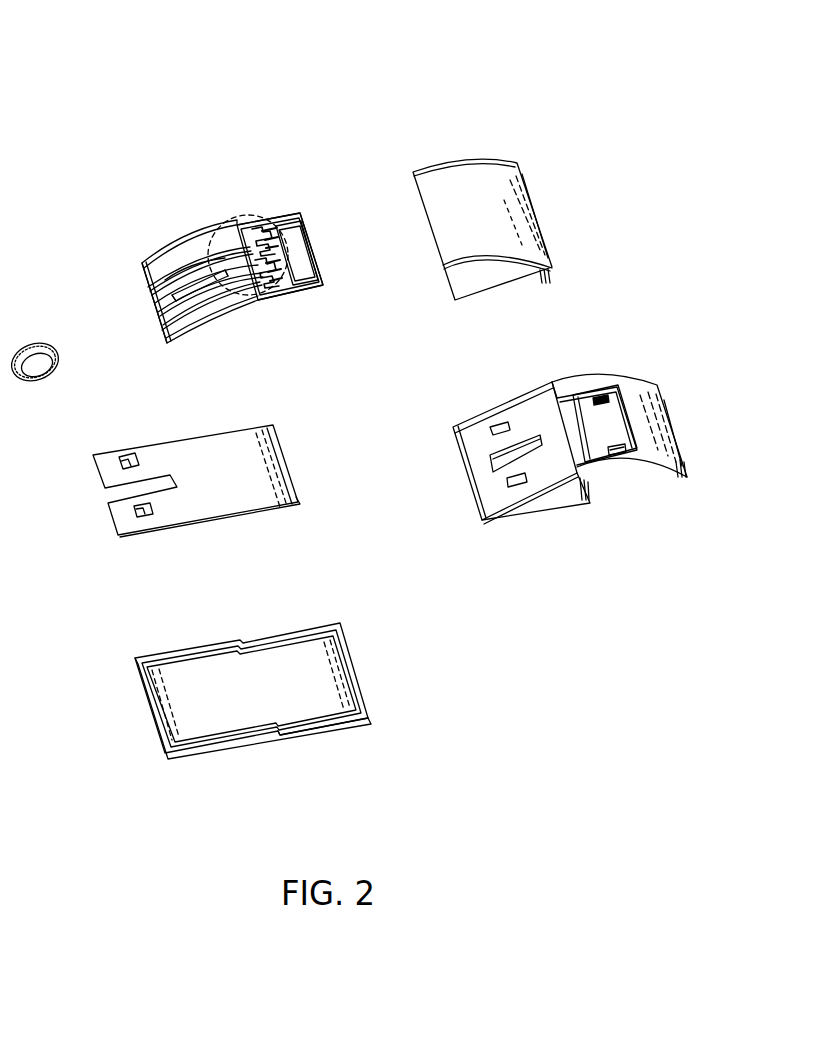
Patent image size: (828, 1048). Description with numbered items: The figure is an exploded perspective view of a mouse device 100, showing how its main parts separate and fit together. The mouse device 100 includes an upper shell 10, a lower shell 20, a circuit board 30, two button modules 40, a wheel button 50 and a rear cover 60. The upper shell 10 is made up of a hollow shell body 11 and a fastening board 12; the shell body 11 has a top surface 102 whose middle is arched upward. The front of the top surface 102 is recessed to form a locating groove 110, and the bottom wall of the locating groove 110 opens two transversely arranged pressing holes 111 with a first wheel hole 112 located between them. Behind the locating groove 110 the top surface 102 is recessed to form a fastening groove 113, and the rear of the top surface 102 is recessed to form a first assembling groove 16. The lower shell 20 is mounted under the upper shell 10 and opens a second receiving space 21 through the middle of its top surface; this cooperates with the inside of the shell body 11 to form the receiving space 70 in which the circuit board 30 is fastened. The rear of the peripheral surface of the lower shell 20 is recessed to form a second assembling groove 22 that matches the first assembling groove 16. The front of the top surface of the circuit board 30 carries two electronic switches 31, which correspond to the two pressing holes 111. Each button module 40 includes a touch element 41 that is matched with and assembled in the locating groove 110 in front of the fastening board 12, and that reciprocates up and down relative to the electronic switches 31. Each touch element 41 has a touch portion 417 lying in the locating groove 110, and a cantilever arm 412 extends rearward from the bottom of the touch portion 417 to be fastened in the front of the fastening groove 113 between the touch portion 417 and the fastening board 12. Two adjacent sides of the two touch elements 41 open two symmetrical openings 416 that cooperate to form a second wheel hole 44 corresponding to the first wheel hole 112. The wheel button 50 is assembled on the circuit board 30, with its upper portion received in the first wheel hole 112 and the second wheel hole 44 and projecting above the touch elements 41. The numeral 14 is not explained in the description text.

The mouse device 100 is at (28, 37).
The upper shell 10 is at (500, 427).
The shell body 11 is at (476, 468).
The fastening board 12 is at (323, 274).
The slot 14 is at (613, 454).
The first assembling groove 16 is at (670, 484).
The lower shell 20 is at (265, 688).
The second receiving space 21 is at (233, 672).
The second assembling groove 22 is at (313, 724).
The circuit board 30 is at (196, 481).
The electronic switch 31 is at (128, 457).
The button module 40 is at (234, 268).
The touch element 41 is at (145, 262).
The second wheel hole 44 is at (158, 303).
The wheel button 50 is at (38, 340).
The rear cover 60 is at (541, 196).
The receiving space 70 is at (227, 720).
The top surface 102 is at (523, 488).
The locating groove 110 is at (585, 436).
The pressing hole 111 is at (505, 423).
The first wheel hole 112 is at (498, 460).
The fastening groove 113 is at (617, 417).
The cantilever arm 412 is at (240, 228).
The symmetrical opening 416 is at (180, 276).
The touch portion 417 is at (208, 300).